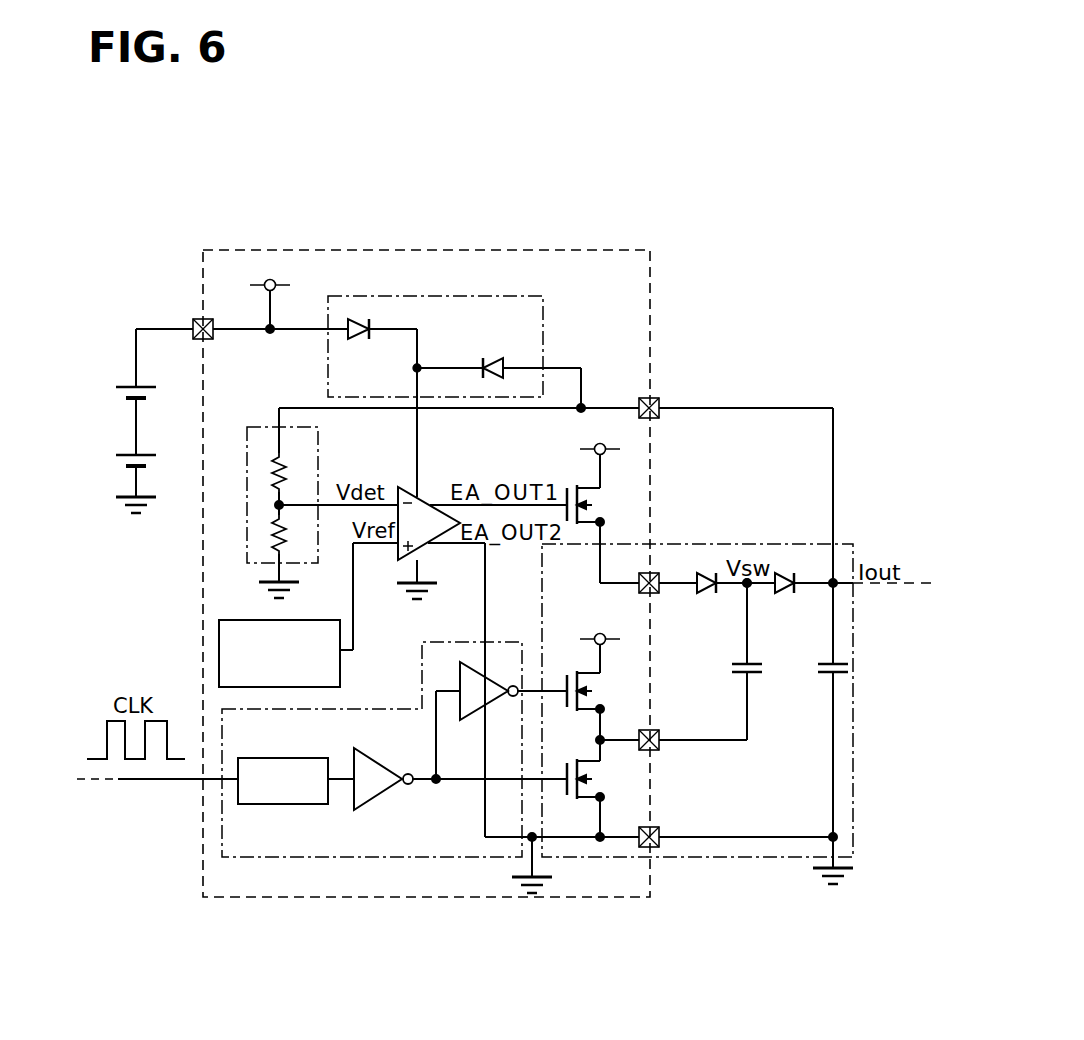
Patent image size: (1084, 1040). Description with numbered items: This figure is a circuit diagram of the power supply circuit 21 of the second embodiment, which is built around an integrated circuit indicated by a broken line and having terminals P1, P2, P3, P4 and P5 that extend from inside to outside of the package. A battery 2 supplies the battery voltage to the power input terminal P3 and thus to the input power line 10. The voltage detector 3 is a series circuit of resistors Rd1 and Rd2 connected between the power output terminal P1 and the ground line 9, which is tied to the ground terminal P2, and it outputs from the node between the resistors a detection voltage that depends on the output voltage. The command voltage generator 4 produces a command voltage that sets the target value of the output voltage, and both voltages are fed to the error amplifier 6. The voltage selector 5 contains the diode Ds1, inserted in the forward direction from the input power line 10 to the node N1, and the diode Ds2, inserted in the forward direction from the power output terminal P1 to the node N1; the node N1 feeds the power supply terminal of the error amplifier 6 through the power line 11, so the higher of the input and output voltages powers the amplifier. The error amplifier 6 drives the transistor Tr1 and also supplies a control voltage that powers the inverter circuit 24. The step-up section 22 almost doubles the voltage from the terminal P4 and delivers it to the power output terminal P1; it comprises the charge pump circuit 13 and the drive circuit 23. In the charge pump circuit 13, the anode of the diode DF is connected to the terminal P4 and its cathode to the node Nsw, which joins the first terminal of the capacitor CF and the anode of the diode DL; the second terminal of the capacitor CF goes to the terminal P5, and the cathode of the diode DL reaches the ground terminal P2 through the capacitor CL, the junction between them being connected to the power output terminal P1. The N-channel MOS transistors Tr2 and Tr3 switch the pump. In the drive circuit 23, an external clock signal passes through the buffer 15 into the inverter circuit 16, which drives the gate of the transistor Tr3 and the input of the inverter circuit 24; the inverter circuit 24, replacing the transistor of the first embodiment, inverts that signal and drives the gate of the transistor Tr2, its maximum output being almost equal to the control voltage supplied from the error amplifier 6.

The power supply circuit 21 is at (457, 211).
The step-up section 22 is at (552, 916).
The battery 2 is at (130, 430).
The voltage detector 3 is at (280, 483).
The command voltage generator 4 is at (236, 620).
The voltage selector 5 is at (483, 296).
The error amplifier 6 is at (428, 492).
The ground line 9 is at (287, 578).
The input power line 10 is at (275, 292).
The power line 11 is at (419, 425).
The charge pump circuit 13 is at (775, 543).
The buffer 15 is at (292, 805).
The inverter circuit 16 is at (380, 796).
The drive circuit 23 is at (463, 640).
The inverter circuit 24 is at (475, 720).
The power output terminal P1 is at (660, 398).
The ground terminal P2 is at (657, 830).
The power input terminal P3 is at (196, 318).
The terminal P4 is at (655, 572).
The terminal P5 is at (657, 730).
The transistor Tr1 is at (592, 496).
The transistor Tr2 is at (592, 682).
The transistor Tr3 is at (592, 788).
The diode Ds1 is at (362, 318).
The diode Ds2 is at (495, 360).
The node N1 is at (416, 368).
The resistor Rd1 is at (296, 479).
The resistor Rd2 is at (293, 516).
The diode DF is at (707, 594).
The diode DL is at (786, 594).
The node Nsw is at (744, 590).
The capacitor CF is at (757, 668).
The capacitor CL is at (818, 668).